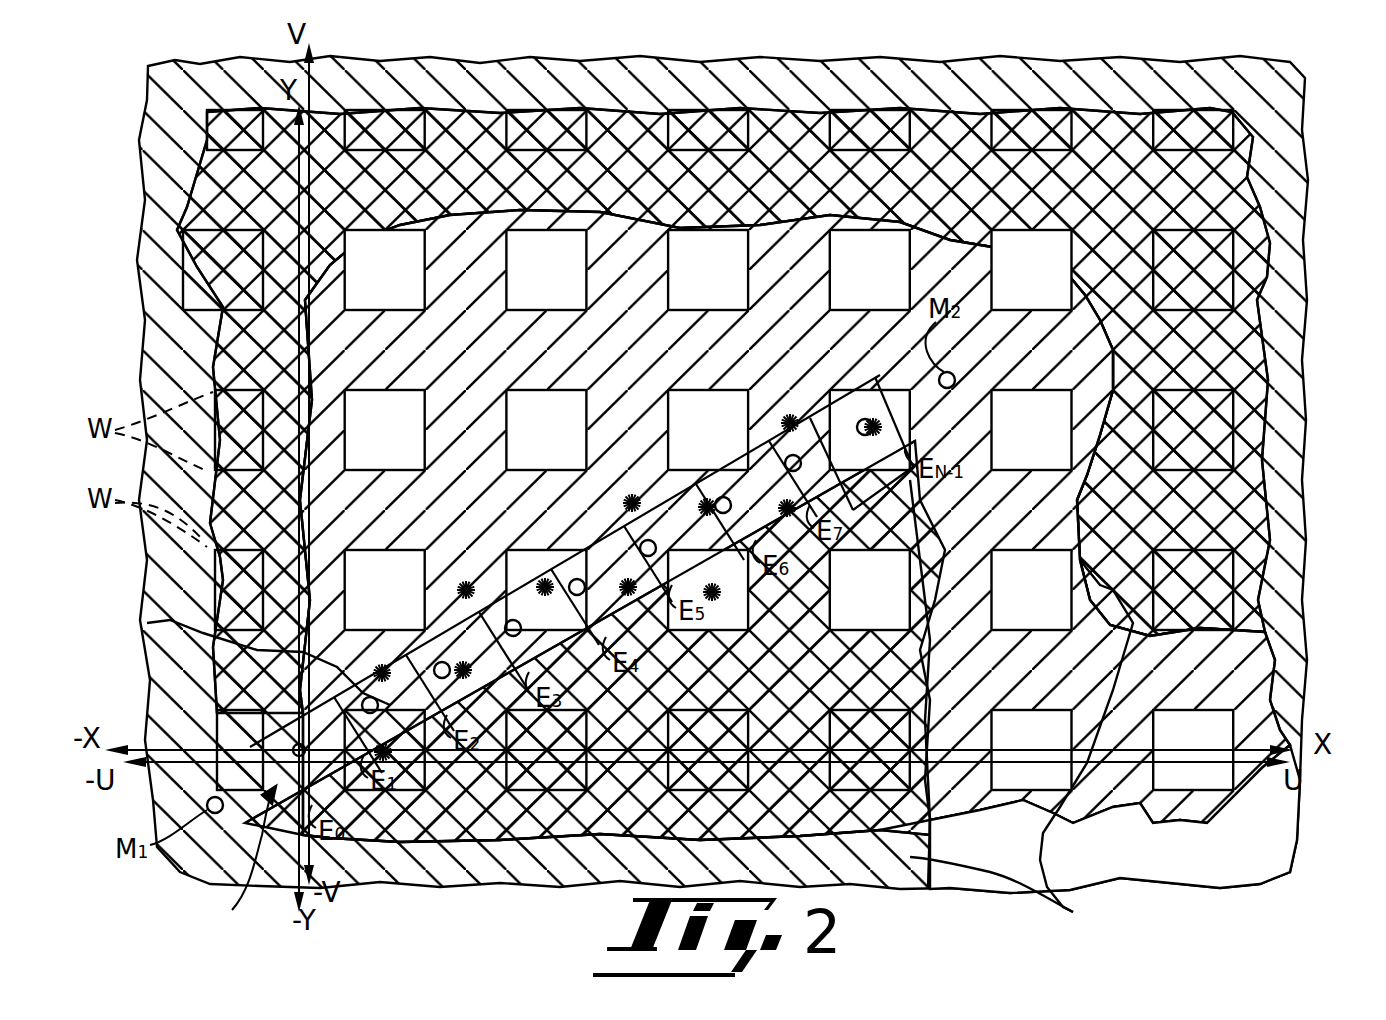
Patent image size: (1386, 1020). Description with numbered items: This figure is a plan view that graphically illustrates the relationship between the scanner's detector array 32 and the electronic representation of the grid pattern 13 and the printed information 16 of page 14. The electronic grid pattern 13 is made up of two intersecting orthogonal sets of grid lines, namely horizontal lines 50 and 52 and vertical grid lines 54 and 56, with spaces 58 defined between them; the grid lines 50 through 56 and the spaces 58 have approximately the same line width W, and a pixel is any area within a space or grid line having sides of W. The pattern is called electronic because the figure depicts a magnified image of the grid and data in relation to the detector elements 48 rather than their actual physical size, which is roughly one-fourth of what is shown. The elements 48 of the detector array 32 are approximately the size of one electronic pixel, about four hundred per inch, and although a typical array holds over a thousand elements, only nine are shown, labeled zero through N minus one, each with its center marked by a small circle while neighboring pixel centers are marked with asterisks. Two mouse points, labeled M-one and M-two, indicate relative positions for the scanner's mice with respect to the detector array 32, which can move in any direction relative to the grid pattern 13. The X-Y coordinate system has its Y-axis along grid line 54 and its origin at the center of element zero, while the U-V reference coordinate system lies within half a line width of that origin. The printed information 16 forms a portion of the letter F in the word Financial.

The electronic grid pattern 13 is at (1296, 647).
The page 14 is at (1278, 847).
The printed information 16 is at (1021, 743).
The detector array 32 is at (237, 857).
The detector elements 48 is at (147, 623).
The horizontal grid line 50 is at (207, 190).
The horizontal grid line 52 is at (217, 360).
The vertical grid line 54 is at (335, 123).
The vertical grid line 56 is at (473, 107).
The spaces 58 is at (1296, 335).